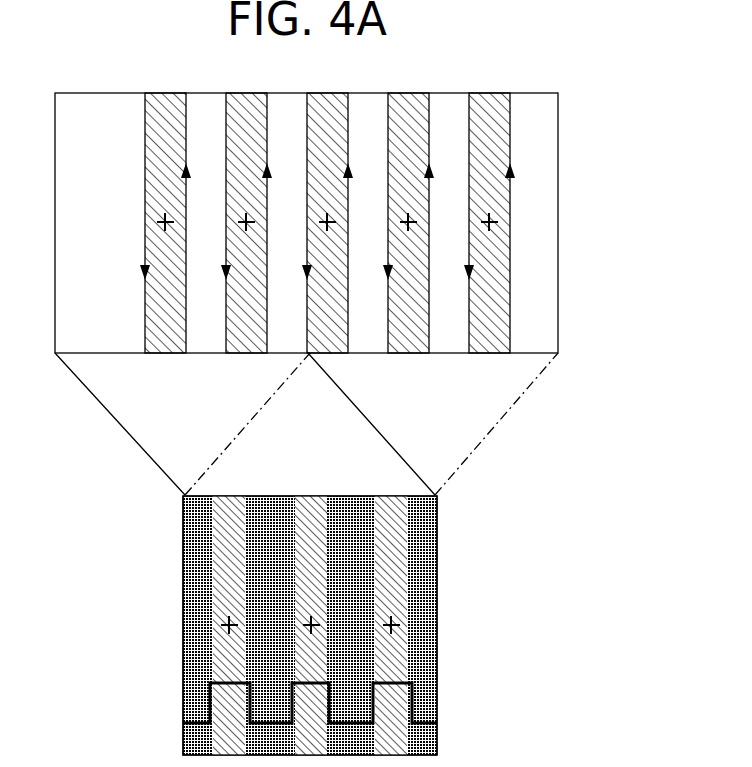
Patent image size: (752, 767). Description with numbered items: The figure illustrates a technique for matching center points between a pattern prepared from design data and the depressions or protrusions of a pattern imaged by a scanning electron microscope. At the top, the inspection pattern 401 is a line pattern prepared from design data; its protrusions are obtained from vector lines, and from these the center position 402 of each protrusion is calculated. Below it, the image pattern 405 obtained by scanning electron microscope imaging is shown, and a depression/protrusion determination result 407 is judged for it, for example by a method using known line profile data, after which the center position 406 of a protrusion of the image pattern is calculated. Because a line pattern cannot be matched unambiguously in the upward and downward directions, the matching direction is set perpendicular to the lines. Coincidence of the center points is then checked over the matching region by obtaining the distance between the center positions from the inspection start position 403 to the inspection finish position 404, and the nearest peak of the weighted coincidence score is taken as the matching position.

The inspection pattern 401 is at (558, 97).
The center position of the protrusion 402 is at (490, 208).
The inspection start position 403 is at (137, 450).
The inspection finish position 404 is at (267, 402).
The image pattern 405 is at (437, 545).
The center position of a protrusion of the image pattern 406 is at (400, 622).
The depression/protrusion determination result 407 is at (437, 690).